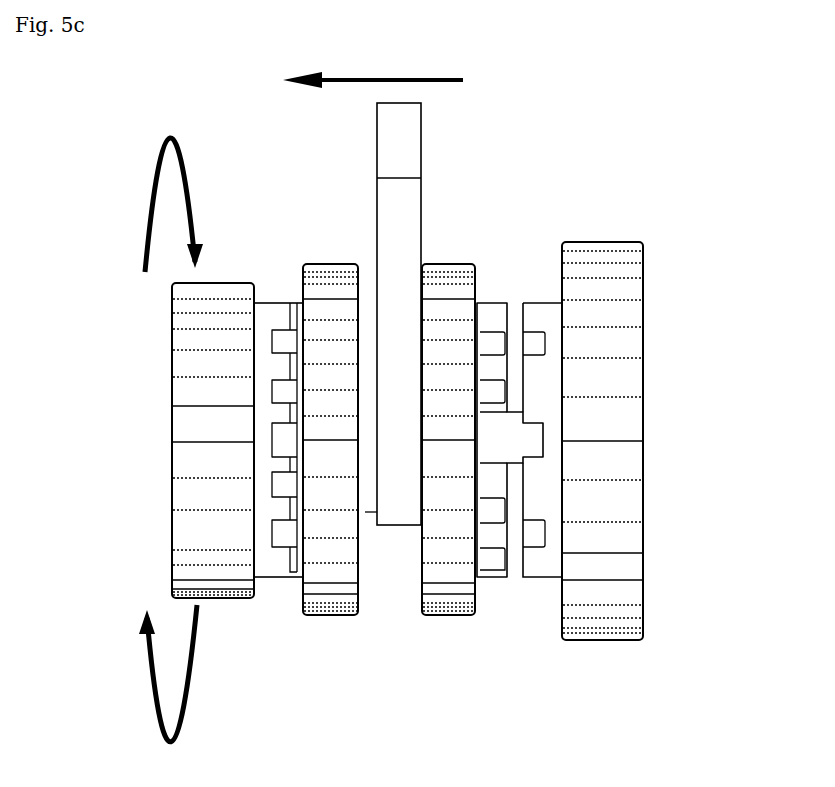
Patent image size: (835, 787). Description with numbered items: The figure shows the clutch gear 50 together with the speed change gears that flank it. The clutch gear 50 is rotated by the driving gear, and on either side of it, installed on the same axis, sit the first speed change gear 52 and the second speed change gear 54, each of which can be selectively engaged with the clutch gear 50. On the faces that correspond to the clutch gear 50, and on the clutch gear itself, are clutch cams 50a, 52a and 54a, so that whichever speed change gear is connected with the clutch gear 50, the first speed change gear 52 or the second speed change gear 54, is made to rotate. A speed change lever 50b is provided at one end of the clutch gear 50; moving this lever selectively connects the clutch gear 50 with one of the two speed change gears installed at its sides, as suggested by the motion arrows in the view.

The clutch gear 50 is at (442, 607).
The clutch cam 50a is at (493, 315).
The speed change lever 50b is at (412, 150).
The first speed change gear 52 is at (185, 395).
The clutch cam 52a is at (268, 302).
The second speed change gear 54 is at (635, 345).
The clutch cam 54a is at (545, 570).